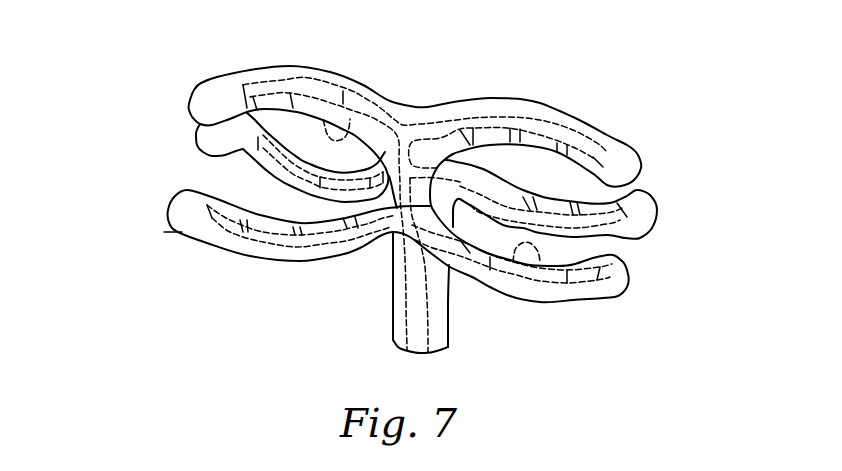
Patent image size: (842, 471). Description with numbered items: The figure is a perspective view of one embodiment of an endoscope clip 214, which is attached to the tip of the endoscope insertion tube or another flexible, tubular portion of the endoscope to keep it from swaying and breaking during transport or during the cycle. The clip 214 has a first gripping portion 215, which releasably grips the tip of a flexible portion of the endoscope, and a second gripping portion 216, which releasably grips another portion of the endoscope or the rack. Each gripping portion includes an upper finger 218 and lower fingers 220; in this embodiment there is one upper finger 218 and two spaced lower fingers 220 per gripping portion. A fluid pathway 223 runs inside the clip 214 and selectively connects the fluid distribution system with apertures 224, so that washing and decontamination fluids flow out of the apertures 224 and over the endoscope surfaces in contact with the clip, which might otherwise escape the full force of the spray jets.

The clip 214 is at (492, 58).
The first gripping portion 215 is at (145, 115).
The second gripping portion 216 is at (675, 173).
The upper finger 218 is at (211, 95).
The lower finger 220 is at (240, 150).
The fluid pathway 223 is at (410, 297).
The apertures 224 is at (350, 117).